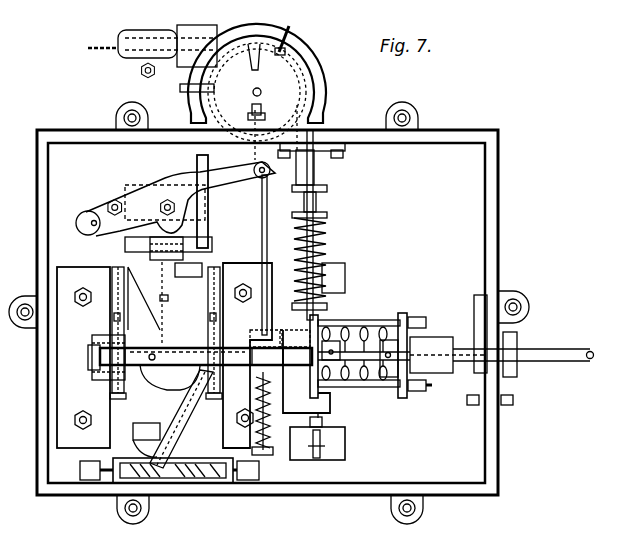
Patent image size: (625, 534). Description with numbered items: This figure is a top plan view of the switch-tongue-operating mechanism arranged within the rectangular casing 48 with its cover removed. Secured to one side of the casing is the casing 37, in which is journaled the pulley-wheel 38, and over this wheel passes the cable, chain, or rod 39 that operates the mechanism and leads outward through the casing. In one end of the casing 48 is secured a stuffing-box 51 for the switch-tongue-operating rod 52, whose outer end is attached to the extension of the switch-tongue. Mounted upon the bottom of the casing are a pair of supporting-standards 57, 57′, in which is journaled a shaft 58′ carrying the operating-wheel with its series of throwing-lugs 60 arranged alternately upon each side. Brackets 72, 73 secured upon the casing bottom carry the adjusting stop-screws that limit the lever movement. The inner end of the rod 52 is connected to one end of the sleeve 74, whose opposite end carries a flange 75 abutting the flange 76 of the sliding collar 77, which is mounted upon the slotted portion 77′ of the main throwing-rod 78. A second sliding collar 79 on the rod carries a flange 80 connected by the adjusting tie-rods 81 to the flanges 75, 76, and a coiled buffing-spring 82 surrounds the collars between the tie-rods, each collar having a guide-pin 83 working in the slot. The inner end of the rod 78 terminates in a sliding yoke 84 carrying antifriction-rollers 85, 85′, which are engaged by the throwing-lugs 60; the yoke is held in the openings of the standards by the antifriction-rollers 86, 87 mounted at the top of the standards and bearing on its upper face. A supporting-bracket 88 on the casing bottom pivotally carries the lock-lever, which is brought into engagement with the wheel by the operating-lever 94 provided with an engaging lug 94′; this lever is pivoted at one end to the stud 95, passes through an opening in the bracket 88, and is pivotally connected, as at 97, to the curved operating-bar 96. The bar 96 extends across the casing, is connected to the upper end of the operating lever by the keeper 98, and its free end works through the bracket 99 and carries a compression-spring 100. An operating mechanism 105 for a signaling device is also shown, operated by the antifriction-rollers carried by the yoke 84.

The casing 37 is at (314, 66).
The pulley-wheel 38 is at (312, 90).
The cable, chain, or rod 39 is at (314, 200).
The rectangular casing 48 is at (498, 200).
The stuffing-box 51 is at (518, 372).
The switch-tongue-operating rod 52 is at (589, 360).
The supporting-standard 57 is at (83, 357).
The supporting-standard 57′ is at (247, 355).
The shaft 58′ is at (90, 363).
The throwing-lugs 60 is at (167, 360).
The bracket 72 is at (345, 270).
The bracket 73 is at (345, 452).
The sleeve 74 is at (438, 340).
The flange 75 is at (405, 318).
The flange 76 is at (394, 322).
The sliding collar 77 is at (392, 388).
The slotted portion 77′ is at (366, 386).
The main throwing-rod 78 is at (297, 356).
The sliding collar 79 is at (326, 334).
The flange 80 is at (314, 398).
The adjusting tie-rods 81 is at (355, 321).
The coiled buffing-spring 82 is at (345, 437).
The guide-pin 83 is at (421, 392).
The sliding yoke 84 is at (202, 401).
The antifriction-roller 85 is at (147, 345).
The antifriction-roller 85′ is at (222, 338).
The antifriction-roller 86 is at (112, 370).
The antifriction-roller 87 is at (211, 348).
The supporting-bracket 88 is at (187, 199).
The operating-lever 94 is at (175, 199).
The engaging lug 94′ is at (207, 220).
The stud 95 is at (94, 221).
The curved operating-bar 96 is at (262, 247).
The pivotal connection 97 is at (255, 168).
The keeper 98 is at (266, 347).
The bracket 99 is at (254, 440).
The compression-spring 100 is at (257, 392).
The operating mechanism for a signaling device 105 is at (193, 483).